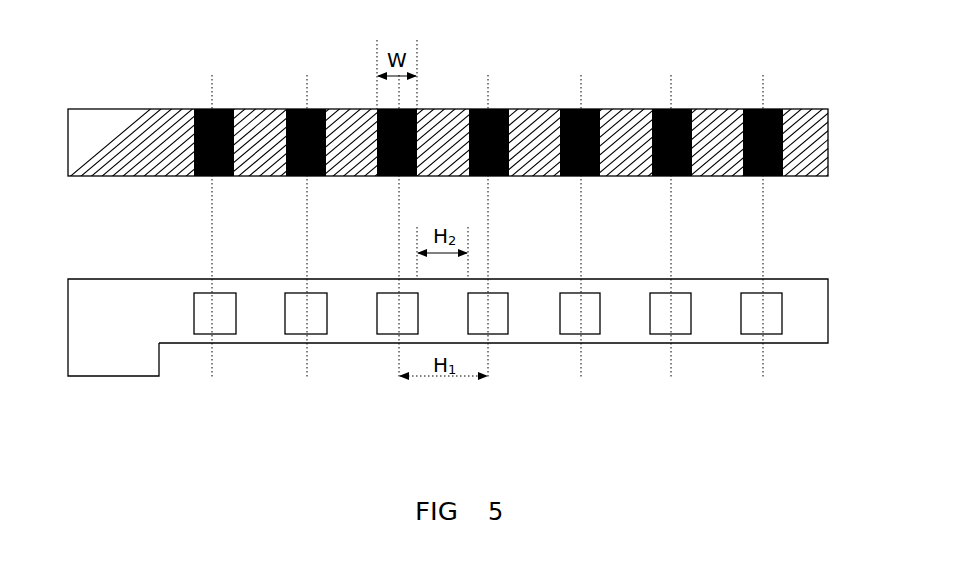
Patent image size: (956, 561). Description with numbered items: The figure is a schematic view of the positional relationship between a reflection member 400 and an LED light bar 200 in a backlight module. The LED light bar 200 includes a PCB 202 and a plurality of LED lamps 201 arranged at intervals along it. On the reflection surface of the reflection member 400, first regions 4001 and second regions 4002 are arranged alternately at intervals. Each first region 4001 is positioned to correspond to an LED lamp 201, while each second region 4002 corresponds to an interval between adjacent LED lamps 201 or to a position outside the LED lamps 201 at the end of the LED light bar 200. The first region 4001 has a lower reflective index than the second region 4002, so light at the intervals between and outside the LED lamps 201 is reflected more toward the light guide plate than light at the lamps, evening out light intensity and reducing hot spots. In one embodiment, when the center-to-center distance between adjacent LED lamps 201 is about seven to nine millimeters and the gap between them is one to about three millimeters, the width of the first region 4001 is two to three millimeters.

The reflection member 400 is at (478, 100).
The first region 4001 is at (193, 108).
The second region 4002 is at (83, 108).
The LED light bar 200 is at (494, 327).
The LED lamp 201 is at (212, 315).
The PCB 202 is at (112, 352).